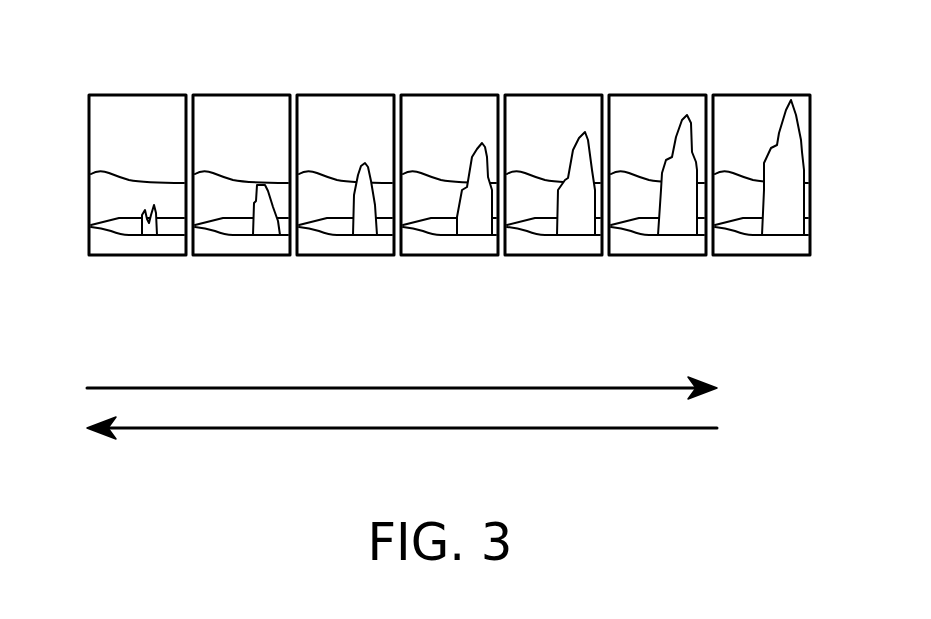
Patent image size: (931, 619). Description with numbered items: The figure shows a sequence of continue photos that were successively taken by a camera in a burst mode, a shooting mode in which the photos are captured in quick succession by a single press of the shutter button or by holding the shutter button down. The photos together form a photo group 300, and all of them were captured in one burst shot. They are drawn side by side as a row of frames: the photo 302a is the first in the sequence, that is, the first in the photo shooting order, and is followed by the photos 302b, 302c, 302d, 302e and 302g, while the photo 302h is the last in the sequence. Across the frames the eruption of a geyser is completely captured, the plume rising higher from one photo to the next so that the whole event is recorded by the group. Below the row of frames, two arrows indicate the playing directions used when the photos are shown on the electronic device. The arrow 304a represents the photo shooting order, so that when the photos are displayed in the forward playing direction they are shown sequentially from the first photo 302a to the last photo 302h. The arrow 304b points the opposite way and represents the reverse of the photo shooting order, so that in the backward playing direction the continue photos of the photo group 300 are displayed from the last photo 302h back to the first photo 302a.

The photo group 300 is at (810, 84).
The photo 302a is at (137, 256).
The photo 302b is at (241, 256).
The photo 302c is at (345, 256).
The photo 302d is at (449, 256).
The photo 302e is at (553, 256).
The photo 302g is at (657, 256).
The photo 302h is at (761, 256).
The arrow 304a is at (117, 388).
The arrow 304b is at (688, 431).